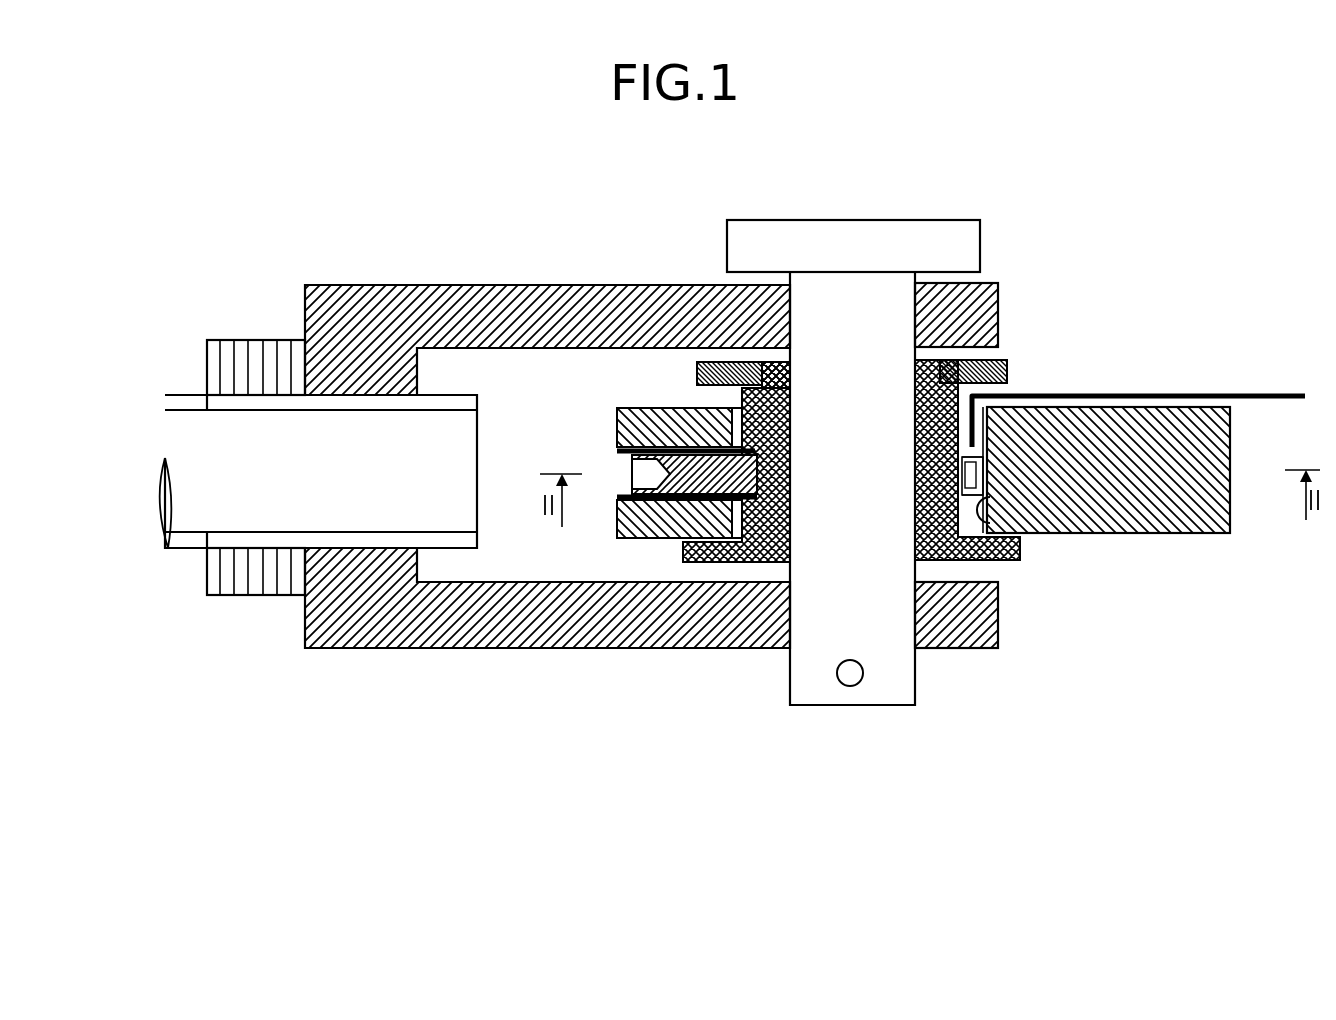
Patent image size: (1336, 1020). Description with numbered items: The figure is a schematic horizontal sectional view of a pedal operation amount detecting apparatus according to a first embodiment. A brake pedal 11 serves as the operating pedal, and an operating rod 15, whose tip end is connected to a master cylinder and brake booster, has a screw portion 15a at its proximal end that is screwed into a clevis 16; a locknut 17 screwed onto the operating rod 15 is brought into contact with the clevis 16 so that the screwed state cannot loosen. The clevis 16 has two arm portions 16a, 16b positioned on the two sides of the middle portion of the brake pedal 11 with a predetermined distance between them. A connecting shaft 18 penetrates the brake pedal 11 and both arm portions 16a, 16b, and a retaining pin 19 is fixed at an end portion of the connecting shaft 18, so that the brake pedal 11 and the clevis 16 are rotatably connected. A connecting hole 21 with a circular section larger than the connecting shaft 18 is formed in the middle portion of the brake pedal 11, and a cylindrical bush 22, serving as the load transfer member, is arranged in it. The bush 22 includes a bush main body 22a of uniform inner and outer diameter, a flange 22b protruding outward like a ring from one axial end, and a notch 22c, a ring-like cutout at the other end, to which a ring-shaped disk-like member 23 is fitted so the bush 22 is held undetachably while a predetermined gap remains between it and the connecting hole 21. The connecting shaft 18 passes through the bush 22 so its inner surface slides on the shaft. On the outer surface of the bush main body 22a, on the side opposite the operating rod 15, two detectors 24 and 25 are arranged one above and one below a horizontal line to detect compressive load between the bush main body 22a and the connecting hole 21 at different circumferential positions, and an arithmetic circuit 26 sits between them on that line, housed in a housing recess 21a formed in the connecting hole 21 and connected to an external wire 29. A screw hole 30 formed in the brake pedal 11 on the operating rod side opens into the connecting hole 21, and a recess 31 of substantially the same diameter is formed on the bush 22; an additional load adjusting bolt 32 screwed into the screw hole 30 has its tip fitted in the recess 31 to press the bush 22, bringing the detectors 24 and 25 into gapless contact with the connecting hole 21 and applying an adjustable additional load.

The brake pedal 11 is at (1195, 505).
The operating rod 15 is at (188, 437).
The screw portion 15a is at (190, 550).
The clevis 16 is at (388, 627).
The arm portion 16a is at (980, 310).
The arm portion 16b is at (990, 628).
The locknut 17 is at (232, 362).
The connecting shaft 18 is at (910, 235).
The retaining pin 19 is at (850, 676).
The connecting hole 21 is at (745, 513).
The housing recess 21a is at (985, 523).
The bush 22 is at (943, 568).
The bush main body 22a is at (687, 472).
The flange 22b is at (683, 548).
The notch 22c is at (762, 371).
The disk-like member 23 is at (712, 372).
The detector 24 is at (968, 470).
The detector 25 is at (970, 475).
The arithmetic circuit 26 is at (977, 453).
The wire 29 is at (1262, 392).
The screw hole 30 is at (623, 484).
The recess 31 is at (745, 476).
The additional load adjusting bolt 32 is at (745, 402).